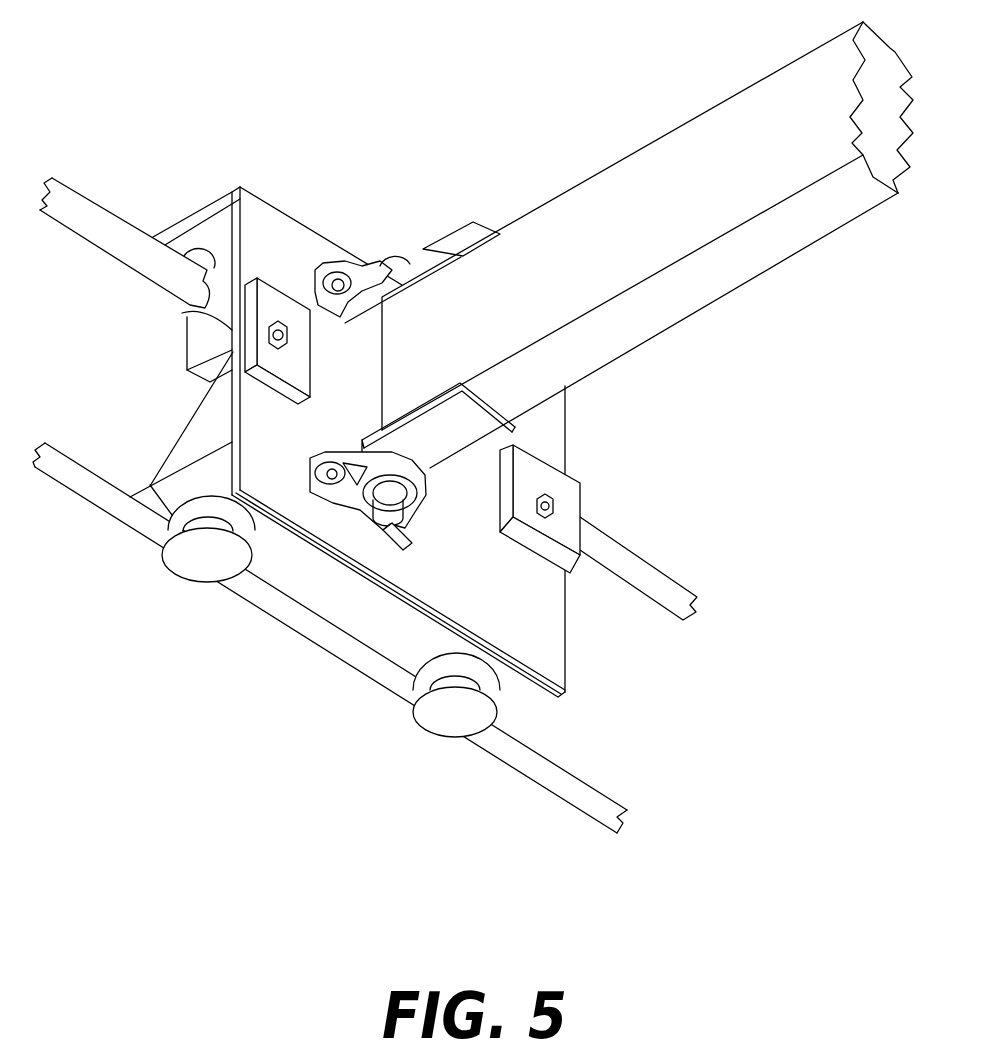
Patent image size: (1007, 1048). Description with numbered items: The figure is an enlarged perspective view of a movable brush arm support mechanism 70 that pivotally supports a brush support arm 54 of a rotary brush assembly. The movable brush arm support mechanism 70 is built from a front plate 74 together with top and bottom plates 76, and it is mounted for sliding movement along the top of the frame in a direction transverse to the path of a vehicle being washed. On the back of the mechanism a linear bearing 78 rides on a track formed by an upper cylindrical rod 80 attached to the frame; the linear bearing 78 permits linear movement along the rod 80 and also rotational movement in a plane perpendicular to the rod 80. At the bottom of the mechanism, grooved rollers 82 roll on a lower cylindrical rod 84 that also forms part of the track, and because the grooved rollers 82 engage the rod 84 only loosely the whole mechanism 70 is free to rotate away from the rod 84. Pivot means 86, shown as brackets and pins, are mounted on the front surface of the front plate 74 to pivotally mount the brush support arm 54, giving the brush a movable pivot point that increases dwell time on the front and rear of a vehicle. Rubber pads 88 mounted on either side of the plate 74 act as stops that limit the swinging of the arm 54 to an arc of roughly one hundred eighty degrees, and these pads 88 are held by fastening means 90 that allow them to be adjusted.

The brush support arm 54 is at (641, 150).
The movable brush arm support mechanism 70 is at (306, 216).
The front plate 74 is at (552, 440).
The top and bottom plates 76 is at (355, 618).
The linear bearing 78 is at (187, 322).
The cylindrical rod 80 is at (93, 200).
The grooved rollers 82 is at (185, 557).
The lower cylindrical rod 84 is at (85, 502).
The pivot means 86 is at (418, 510).
The rubber pads 88 is at (293, 372).
The fastening means 90 is at (556, 507).